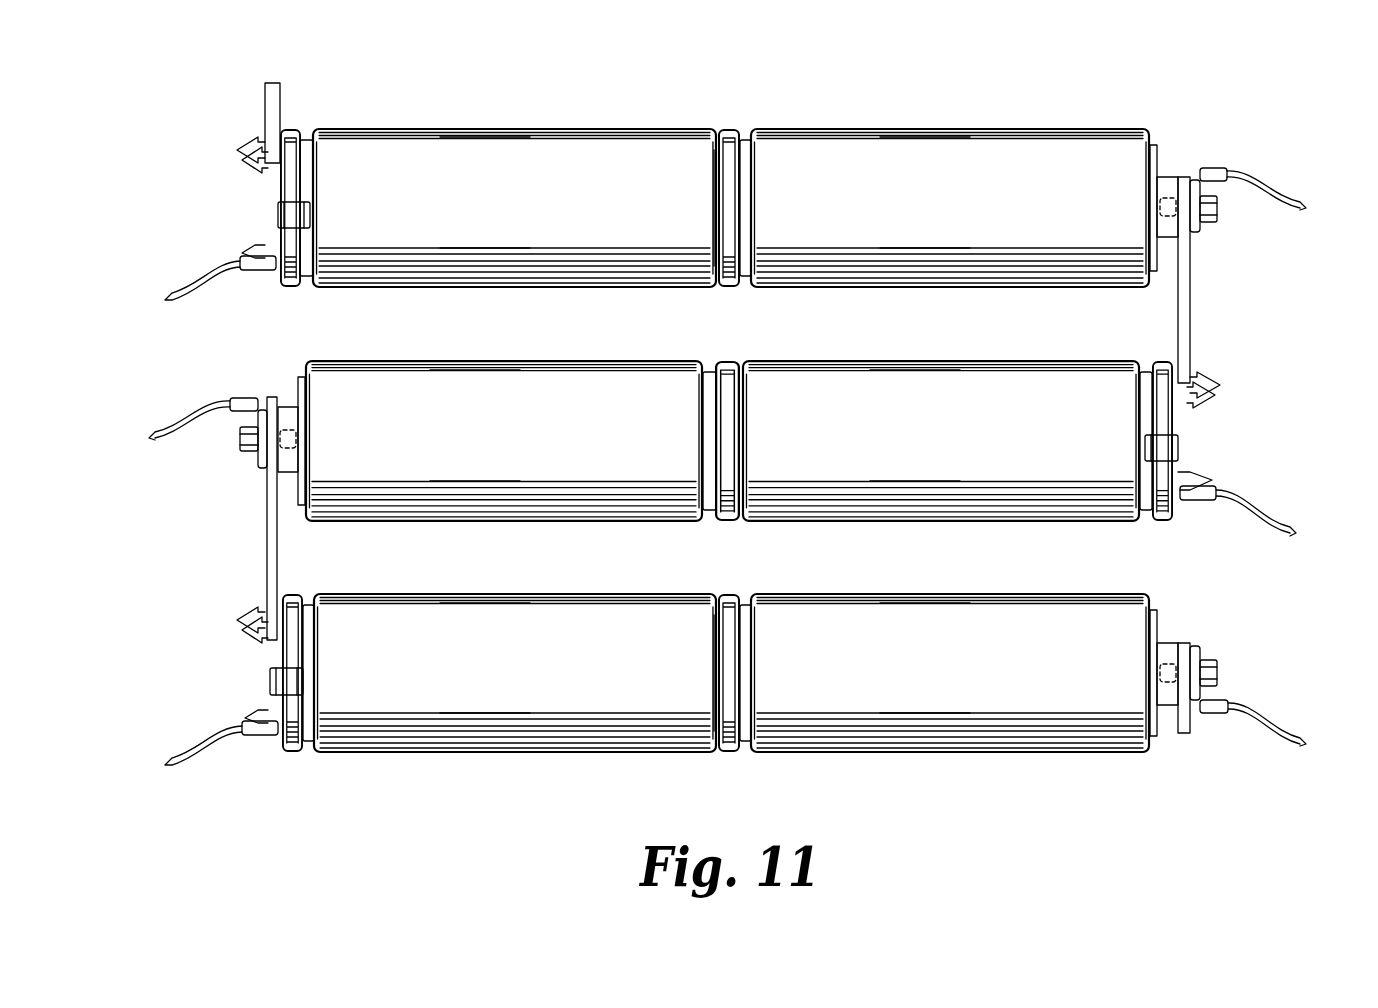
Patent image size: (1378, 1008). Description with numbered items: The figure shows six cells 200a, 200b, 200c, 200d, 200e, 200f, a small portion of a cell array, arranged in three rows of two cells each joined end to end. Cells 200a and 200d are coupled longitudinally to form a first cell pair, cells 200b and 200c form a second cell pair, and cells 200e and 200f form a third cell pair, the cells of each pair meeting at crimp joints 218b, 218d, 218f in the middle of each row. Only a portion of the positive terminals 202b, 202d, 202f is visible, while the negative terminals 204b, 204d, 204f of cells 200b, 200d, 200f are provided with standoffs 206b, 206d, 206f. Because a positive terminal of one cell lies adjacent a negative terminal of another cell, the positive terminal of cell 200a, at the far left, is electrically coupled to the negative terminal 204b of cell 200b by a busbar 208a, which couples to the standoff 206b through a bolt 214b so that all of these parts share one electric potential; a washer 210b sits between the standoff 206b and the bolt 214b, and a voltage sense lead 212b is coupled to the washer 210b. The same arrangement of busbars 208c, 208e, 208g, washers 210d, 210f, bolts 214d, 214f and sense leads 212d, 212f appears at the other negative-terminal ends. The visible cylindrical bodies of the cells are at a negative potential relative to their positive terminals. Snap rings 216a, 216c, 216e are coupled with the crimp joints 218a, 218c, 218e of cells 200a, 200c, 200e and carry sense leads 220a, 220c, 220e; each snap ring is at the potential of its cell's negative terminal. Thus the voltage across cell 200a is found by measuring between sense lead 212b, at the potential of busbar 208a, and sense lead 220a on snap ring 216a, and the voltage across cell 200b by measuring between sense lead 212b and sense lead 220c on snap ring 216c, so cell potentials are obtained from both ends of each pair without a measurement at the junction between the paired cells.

The cell 200a is at (460, 759).
The cell 200b is at (460, 526).
The cell 200c is at (905, 526).
The cell 200d is at (905, 759).
The cell 200e is at (460, 292).
The cell 200f is at (925, 292).
The positive terminal 202b is at (710, 440).
The positive terminal 202d is at (715, 672).
The positive terminal 202f is at (712, 210).
The negative terminal 204b is at (300, 505).
The negative terminal 204d is at (1157, 612).
The negative terminal 204f is at (1157, 148).
The standoff 206b is at (292, 405).
The standoff 206d is at (1165, 643).
The standoff 206f is at (1168, 178).
The busbar 208a is at (267, 558).
The busbar 208c is at (1192, 332).
The busbar 208e is at (282, 100).
The busbar 208g is at (1192, 724).
The washer 210b is at (263, 470).
The washer 210d is at (1194, 647).
The washer 210f is at (1194, 240).
The voltage sense lead 212b is at (187, 408).
The voltage sense lead 212d is at (1268, 715).
The voltage sense lead 212f is at (1262, 182).
The bolt 214b is at (240, 440).
The bolt 214d is at (1218, 672).
The bolt 214f is at (1218, 210).
The snap ring 216a is at (290, 685).
The snap ring 216c is at (1165, 448).
The snap ring 216e is at (290, 218).
The crimp joint 218a is at (290, 596).
The crimp joint 218b is at (728, 524).
The crimp joint 218c is at (1160, 363).
The crimp joint 218d is at (728, 757).
The crimp joint 218e is at (292, 128).
The crimp joint 218f is at (728, 290).
The sense lead 220a is at (200, 750).
The sense lead 220c is at (1250, 505).
The sense lead 220e is at (205, 283).